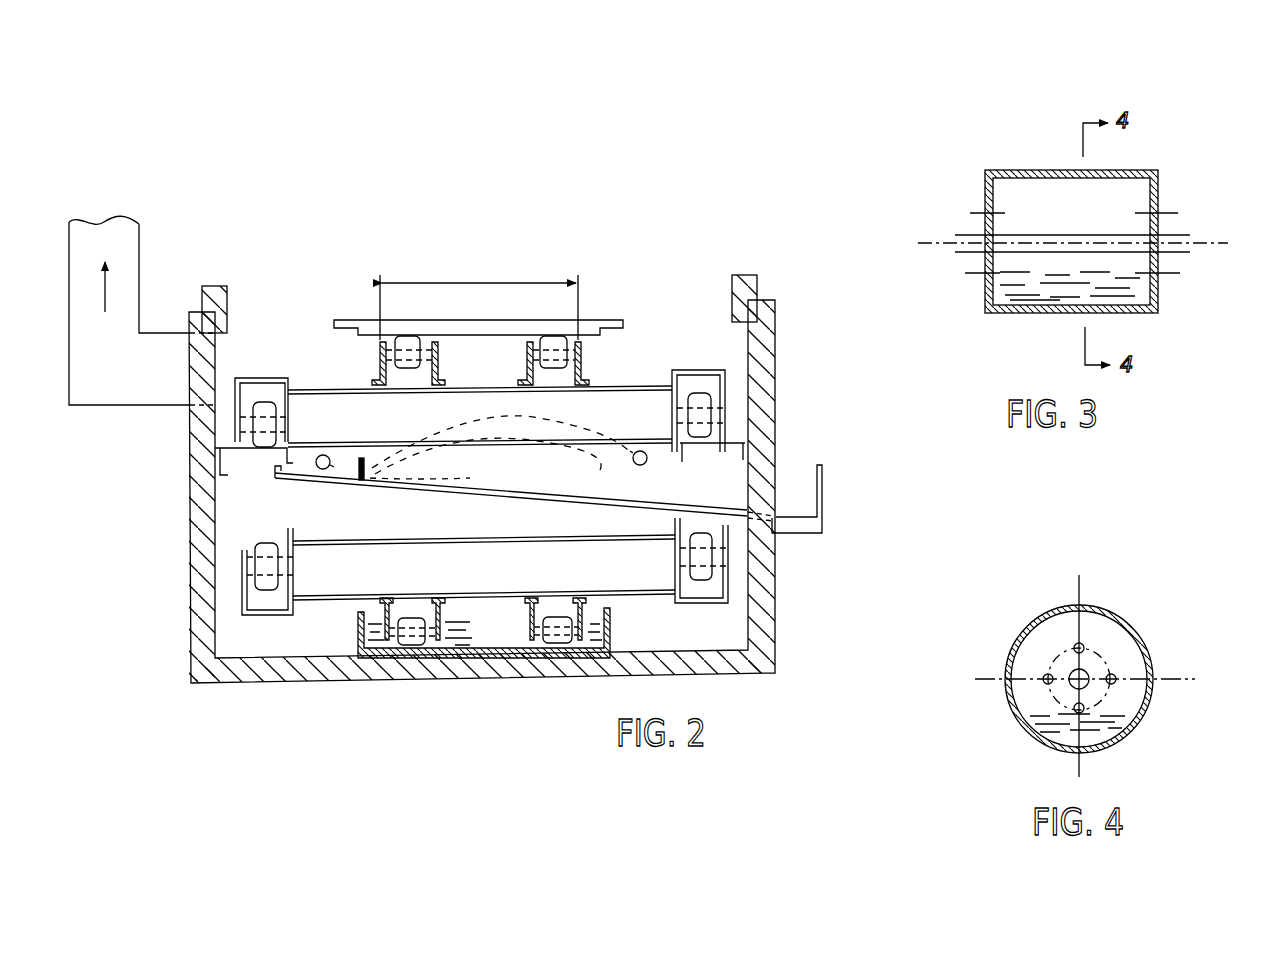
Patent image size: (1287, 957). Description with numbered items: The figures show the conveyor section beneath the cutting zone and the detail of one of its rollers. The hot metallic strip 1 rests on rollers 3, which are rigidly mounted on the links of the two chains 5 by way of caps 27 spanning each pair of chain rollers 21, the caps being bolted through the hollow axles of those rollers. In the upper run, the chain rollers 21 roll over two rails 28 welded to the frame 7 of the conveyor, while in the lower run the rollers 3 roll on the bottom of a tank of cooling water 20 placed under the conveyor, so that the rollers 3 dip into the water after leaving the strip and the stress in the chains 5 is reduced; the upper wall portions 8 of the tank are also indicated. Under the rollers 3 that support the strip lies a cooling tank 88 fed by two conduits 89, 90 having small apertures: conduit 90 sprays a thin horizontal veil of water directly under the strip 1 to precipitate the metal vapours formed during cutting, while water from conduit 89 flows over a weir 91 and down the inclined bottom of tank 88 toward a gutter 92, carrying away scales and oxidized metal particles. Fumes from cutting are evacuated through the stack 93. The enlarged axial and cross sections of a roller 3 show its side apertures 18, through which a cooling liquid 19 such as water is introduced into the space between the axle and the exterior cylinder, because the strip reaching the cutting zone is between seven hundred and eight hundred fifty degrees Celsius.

In FIG. 2, the metallic strip 1 is at (497, 326).
In FIG. 2, the rollers 3 is at (406, 345).
In FIG. 3, the rollers 3 is at (1012, 195).
In FIG. 4, the rollers 3 is at (1030, 700).
In FIG. 2, the chains 5 is at (700, 541).
In FIG. 2, the frame 7 is at (210, 570).
In FIG. 2, the wall block 8 is at (222, 291).
In FIG. 3, the side apertures 18 is at (1152, 268).
In FIG. 4, the side apertures 18 is at (1085, 648).
In FIG. 3, the cooling liquid 19 is at (1155, 283).
In FIG. 4, the cooling liquid 19 is at (1122, 722).
In FIG. 2, the tank of cooling water 20 is at (357, 641).
In FIG. 2, the rollers 21 is at (262, 405).
In FIG. 2, the caps 27 is at (695, 392).
In FIG. 2, the rails 28 is at (248, 453).
In FIG. 2, the cooling tank 88 is at (487, 474).
In FIG. 2, the conduit 89 is at (323, 470).
In FIG. 2, the conduit 90 is at (640, 465).
In FIG. 2, the weir 91 is at (366, 467).
In FIG. 2, the gutter 92 is at (798, 508).
In FIG. 2, the stack 93 is at (128, 257).